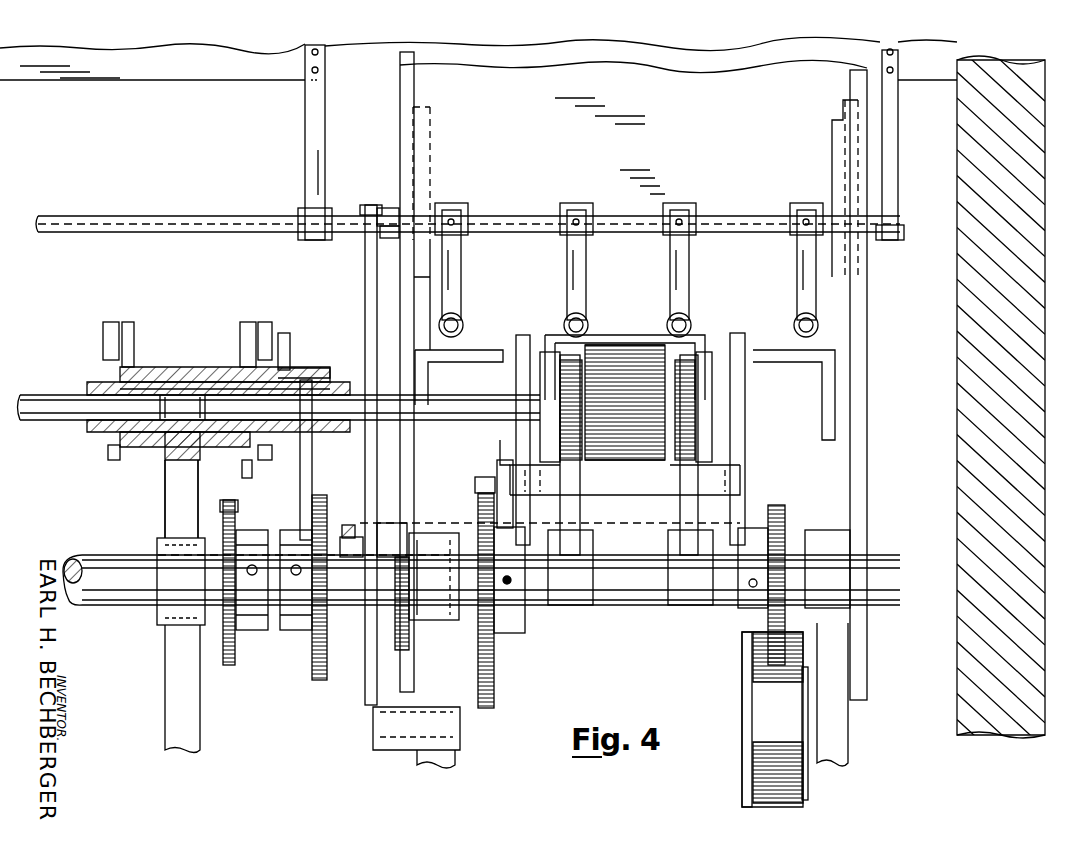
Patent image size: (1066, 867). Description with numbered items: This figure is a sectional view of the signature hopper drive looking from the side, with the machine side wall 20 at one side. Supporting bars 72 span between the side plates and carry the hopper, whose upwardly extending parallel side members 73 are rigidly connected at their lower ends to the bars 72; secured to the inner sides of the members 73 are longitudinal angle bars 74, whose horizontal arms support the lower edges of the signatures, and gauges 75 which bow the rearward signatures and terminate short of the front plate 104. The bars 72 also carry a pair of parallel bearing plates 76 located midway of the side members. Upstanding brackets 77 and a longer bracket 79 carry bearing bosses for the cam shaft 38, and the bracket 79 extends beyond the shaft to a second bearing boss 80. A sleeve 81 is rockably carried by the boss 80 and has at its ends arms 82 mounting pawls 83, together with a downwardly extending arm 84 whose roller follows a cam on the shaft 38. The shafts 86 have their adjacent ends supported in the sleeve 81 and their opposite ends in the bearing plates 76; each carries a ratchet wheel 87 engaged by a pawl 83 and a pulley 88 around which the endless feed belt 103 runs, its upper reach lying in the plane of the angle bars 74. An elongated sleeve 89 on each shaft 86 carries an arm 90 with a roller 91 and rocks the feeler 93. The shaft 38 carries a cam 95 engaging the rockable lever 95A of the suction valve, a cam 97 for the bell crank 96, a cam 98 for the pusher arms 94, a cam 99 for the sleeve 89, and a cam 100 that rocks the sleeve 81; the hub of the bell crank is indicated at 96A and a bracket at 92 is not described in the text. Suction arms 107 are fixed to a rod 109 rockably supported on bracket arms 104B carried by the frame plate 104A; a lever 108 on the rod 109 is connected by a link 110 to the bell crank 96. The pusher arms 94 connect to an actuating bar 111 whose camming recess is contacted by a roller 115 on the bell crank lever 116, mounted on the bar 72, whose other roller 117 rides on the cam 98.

The side wall 20 is at (956, 390).
The cam shaft 38 is at (622, 610).
The supporting bar 72 is at (790, 521).
The side member 73 is at (408, 310).
The angle bar 74 is at (463, 362).
The gauge 75 is at (425, 152).
The bearing plate 76 is at (528, 455).
The upstanding bracket 77 is at (443, 760).
The upstanding bracket 79 is at (175, 718).
The bearing boss 80 is at (197, 364).
The sleeve 81 is at (170, 382).
The arm 82 is at (128, 338).
The pawl 83 is at (105, 341).
The downwardly extending arm 84 is at (242, 480).
The shaft 86 is at (45, 394).
The ratchet wheel 87 is at (110, 454).
The pulley 88 is at (636, 342).
The elongated sleeve 89 is at (445, 435).
The downwardly extending arm 90 is at (306, 476).
The roller 91 is at (326, 500).
The bracket 92 is at (288, 348).
The feeler 93 is at (705, 344).
The pusher arm 94 is at (523, 333).
The cam 95 is at (777, 505).
The rockable lever 95A is at (808, 782).
The bell crank 96 is at (396, 645).
The hub 96A is at (355, 610).
The cam 97 is at (347, 524).
The cam 98 is at (498, 678).
The cam 99 is at (305, 668).
The cam 100 is at (232, 665).
The endless feed belt 103 is at (608, 354).
The front plate 104 is at (697, 81).
The frame plate 104A is at (910, 58).
The bracket arm 104B is at (318, 132).
The suction arm 107 is at (453, 287).
The lever 108 is at (382, 207).
The rod 109 is at (384, 232).
The link 110 is at (364, 288).
The actuating bar 111 is at (628, 485).
The roller 115 is at (511, 466).
The bell crank lever 116 is at (513, 509).
The roller 117 is at (475, 487).